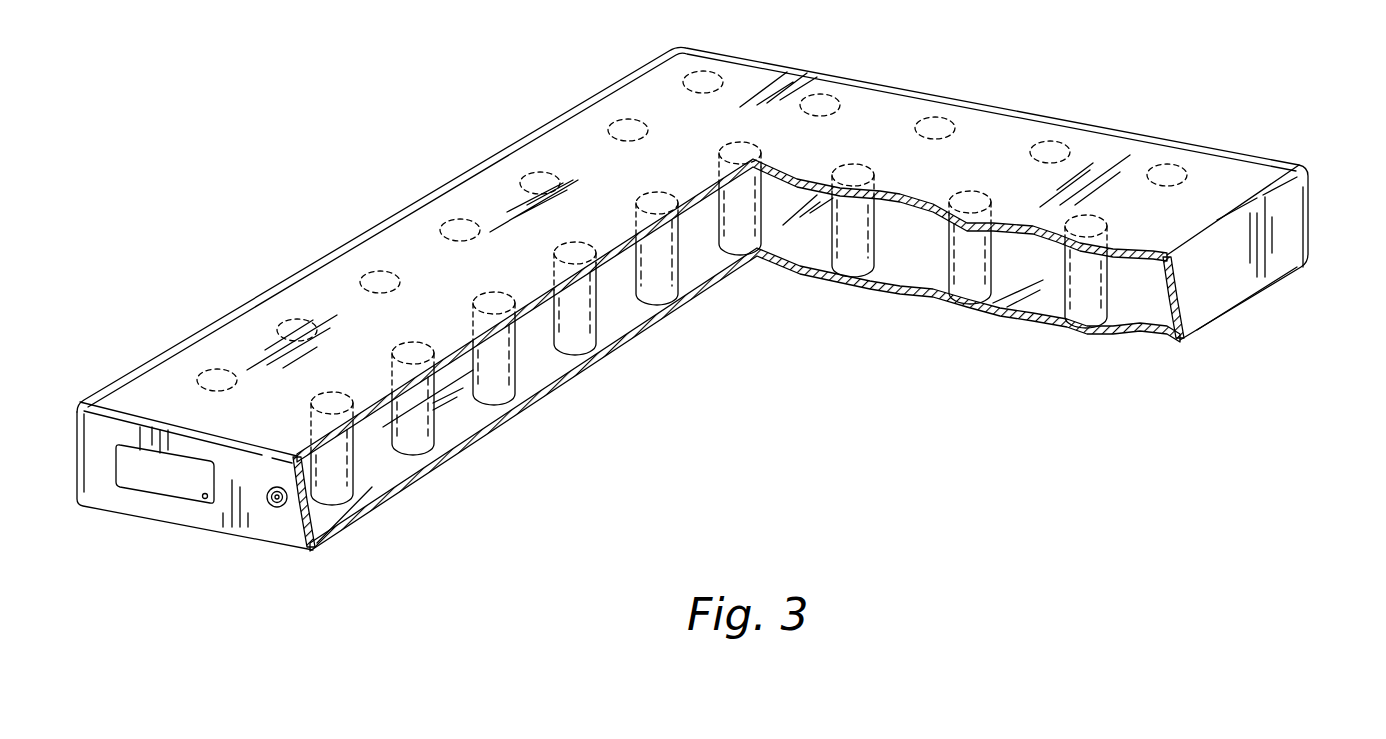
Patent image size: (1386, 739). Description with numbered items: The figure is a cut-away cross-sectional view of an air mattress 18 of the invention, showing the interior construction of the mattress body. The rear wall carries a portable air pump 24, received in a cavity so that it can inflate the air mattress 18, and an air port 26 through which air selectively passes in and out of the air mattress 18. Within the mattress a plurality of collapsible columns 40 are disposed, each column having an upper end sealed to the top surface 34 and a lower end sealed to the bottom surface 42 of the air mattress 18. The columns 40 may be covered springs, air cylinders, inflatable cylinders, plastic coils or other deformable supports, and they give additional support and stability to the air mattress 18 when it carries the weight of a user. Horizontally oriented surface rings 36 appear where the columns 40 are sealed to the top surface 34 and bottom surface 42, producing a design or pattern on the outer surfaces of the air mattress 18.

The air mattress 18 is at (1300, 210).
The portable air pump 24 is at (173, 475).
The air port 26 is at (267, 508).
The top surface 34 is at (880, 113).
The surface rings 36 is at (453, 223).
The collapsible columns 40 is at (507, 366).
The bottom surface 42 is at (920, 296).